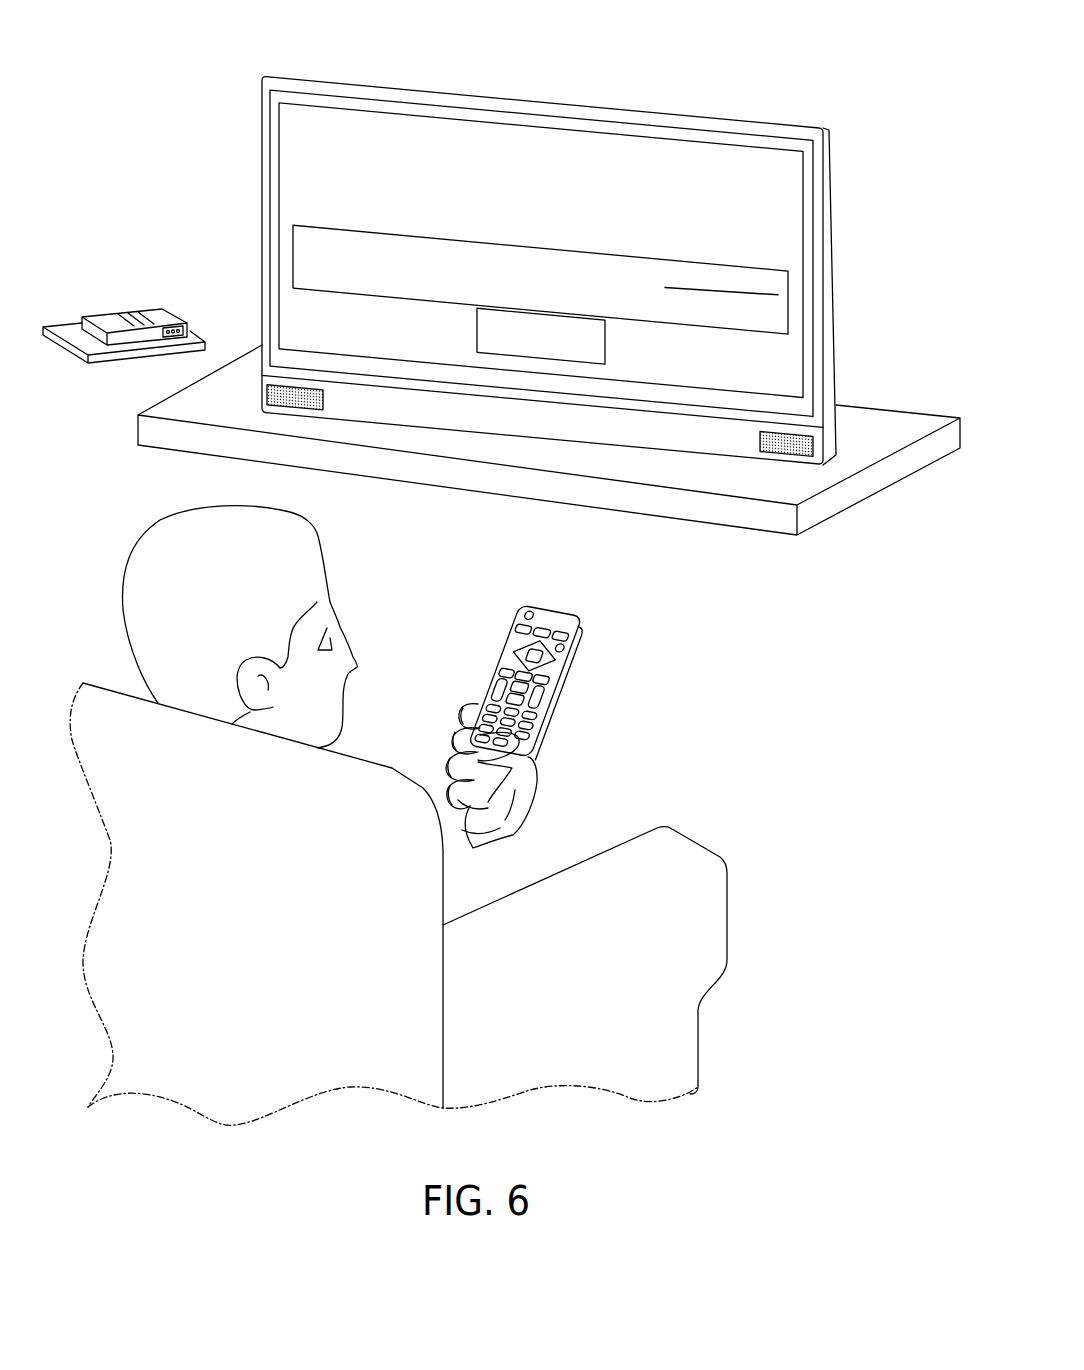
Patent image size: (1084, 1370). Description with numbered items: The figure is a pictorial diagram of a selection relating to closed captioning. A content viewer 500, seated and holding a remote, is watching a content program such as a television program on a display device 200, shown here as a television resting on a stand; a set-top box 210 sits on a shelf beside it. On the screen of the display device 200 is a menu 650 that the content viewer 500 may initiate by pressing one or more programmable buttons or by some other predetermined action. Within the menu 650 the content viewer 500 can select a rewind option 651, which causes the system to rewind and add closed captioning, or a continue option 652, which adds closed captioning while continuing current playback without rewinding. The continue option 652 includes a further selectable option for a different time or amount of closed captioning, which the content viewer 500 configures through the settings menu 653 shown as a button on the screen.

The display device 200 is at (392, 85).
The set-top box / media device 210 is at (157, 312).
The content viewer 500 is at (110, 545).
The menu 650 is at (278, 135).
The rewind option 651 is at (677, 226).
The continue option 652 is at (788, 307).
The settings menu 653 is at (605, 348).